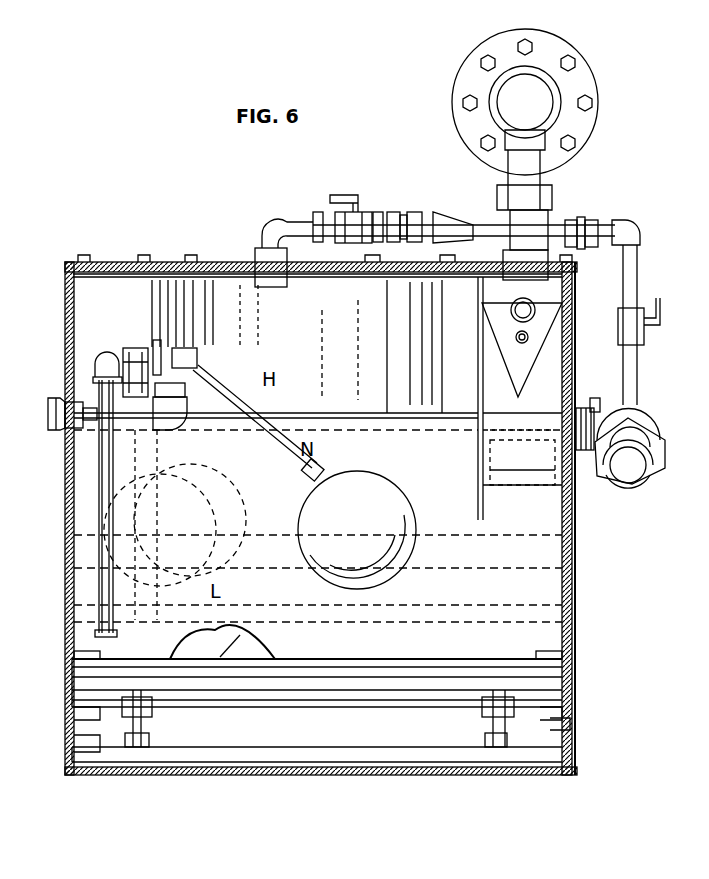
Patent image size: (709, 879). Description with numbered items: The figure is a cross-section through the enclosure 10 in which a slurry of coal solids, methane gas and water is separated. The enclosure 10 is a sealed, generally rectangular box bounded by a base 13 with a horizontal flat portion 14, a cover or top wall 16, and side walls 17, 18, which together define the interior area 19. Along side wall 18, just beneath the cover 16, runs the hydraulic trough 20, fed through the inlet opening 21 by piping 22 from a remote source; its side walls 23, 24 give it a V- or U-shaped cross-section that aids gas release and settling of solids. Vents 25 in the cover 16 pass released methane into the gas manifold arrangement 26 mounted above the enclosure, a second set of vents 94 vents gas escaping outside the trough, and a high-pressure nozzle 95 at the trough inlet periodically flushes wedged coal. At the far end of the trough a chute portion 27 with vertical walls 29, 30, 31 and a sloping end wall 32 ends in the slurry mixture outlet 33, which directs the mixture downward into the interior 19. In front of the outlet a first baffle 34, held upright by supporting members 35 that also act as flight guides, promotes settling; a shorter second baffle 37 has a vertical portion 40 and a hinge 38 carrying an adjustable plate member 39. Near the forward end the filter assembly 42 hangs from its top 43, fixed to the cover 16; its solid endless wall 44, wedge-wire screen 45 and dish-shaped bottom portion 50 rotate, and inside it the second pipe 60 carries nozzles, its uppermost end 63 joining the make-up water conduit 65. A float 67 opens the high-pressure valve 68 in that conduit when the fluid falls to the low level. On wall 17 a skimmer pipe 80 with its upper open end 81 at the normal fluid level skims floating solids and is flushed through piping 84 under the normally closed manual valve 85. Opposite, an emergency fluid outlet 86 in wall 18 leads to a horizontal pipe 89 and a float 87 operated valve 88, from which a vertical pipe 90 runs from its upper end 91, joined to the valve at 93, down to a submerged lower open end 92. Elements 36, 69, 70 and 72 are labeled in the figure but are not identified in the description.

The enclosure 10 is at (175, 230).
The base 13 is at (250, 770).
The horizontal, flat portion 14 is at (392, 770).
The cover or top wall 16 is at (100, 262).
The side wall 17 is at (577, 600).
The side wall 18 is at (65, 488).
The interior area 19 is at (300, 782).
The hydraulic trough 20 is at (478, 350).
The inlet opening 21 is at (478, 330).
The piping 22 is at (512, 310).
The side wall 23 is at (540, 362).
The side wall 24 is at (489, 376).
The vents or openings 25 is at (550, 250).
The gas manifold arrangement 26 is at (555, 100).
The chute portion 27 is at (462, 455).
The vertical parallel wall 29 is at (522, 457).
The vertical parallel wall 30 is at (466, 475).
The vertical parallel wall 31 is at (573, 505).
The sloping end wall 32 is at (530, 570).
The slurry mixture outlet 33 is at (478, 497).
The first baffle 34 is at (432, 660).
The supporting members 35 is at (80, 652).
The liquid surface 36 is at (330, 410).
The second baffle 37 is at (243, 650).
The hinge 38 is at (196, 518).
The plate member 39 is at (179, 530).
The vertical portion 40 is at (218, 652).
The filter assembly 42 is at (232, 295).
The top 43 is at (155, 258).
The solid, endless wall 44 is at (210, 280).
The wedge-wire screen 45 is at (520, 603).
The bottom portion 50 is at (400, 655).
The second pipe 60 is at (330, 250).
The uppermost end 63 is at (310, 250).
The second fluid conduit 65 is at (420, 204).
The float 67 is at (206, 460).
The high pressure valve 68 is at (139, 336).
The bolt 69 is at (140, 714).
The nut 70 is at (485, 747).
The spacer 72 is at (300, 672).
The skimmer pipe 80 is at (649, 494).
The upper open end 81 is at (522, 474).
The piping 84 is at (640, 382).
The valve 85 is at (648, 340).
The emergency fluid outlet 86 is at (50, 412).
The float 87 is at (352, 478).
The valve 88 is at (198, 360).
The horizontal pipe 89 is at (170, 430).
The vertically oriented pipe 90 is at (100, 553).
The upper end 91 is at (100, 362).
The lower open end 92 is at (117, 634).
The connection 93 is at (162, 358).
The second set of vents 94 is at (265, 250).
The high-pressure nozzle 95 is at (522, 345).